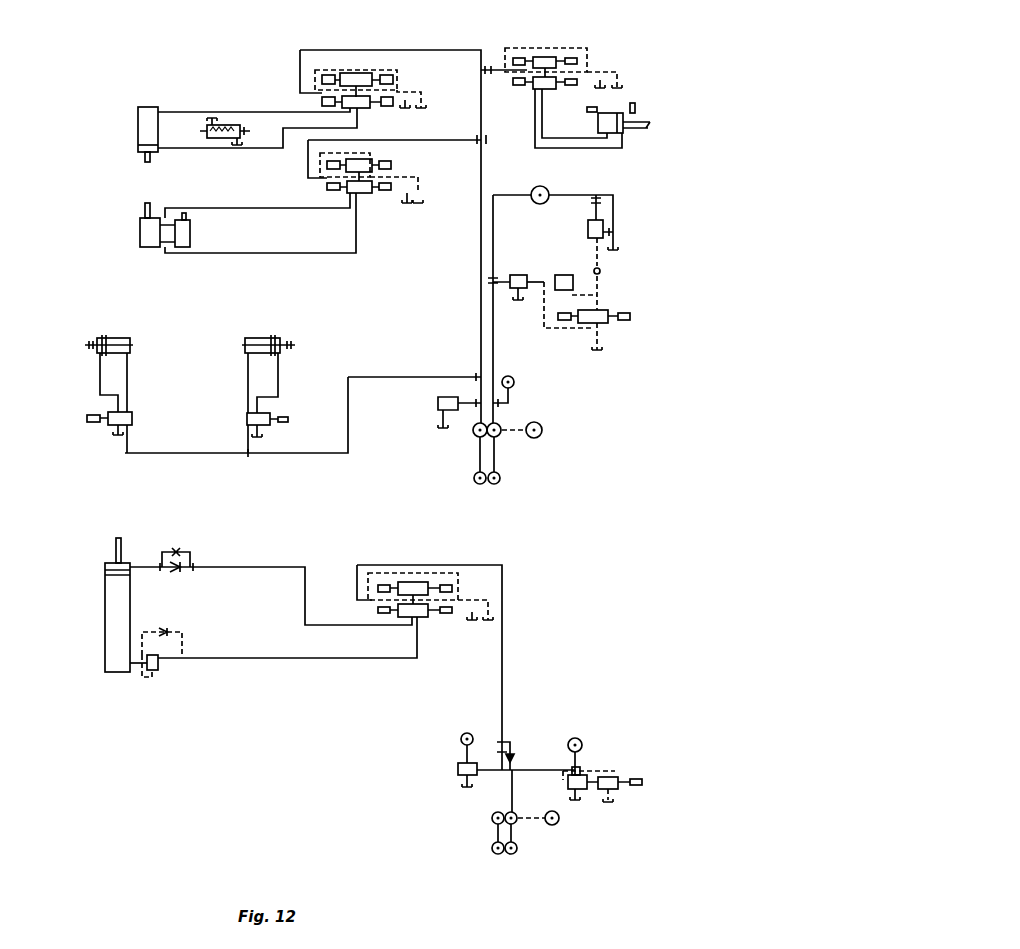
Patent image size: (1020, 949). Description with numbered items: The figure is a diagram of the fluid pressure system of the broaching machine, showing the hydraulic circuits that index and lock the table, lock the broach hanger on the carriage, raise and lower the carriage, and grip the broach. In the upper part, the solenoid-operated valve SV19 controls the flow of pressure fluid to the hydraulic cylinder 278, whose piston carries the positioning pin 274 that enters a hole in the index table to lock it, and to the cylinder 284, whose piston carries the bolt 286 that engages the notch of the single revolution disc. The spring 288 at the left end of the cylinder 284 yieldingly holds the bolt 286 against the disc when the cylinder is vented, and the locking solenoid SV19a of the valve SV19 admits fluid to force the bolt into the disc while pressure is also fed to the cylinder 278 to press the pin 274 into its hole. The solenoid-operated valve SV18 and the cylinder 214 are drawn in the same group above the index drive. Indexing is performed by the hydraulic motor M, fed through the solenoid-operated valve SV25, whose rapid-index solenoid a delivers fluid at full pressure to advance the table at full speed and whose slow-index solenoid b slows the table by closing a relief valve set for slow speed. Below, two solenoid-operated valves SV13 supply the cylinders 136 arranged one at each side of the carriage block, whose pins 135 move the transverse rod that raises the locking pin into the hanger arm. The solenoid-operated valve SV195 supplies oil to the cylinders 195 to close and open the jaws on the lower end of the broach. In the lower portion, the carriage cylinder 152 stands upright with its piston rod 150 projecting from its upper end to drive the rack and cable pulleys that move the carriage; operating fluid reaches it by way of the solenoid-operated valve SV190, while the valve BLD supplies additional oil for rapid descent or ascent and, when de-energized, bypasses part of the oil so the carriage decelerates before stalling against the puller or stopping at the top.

The cylinder 278 is at (138, 128).
The positioning pin 274 is at (146, 160).
The cylinder 284 is at (223, 125).
The bolt 286 is at (205, 127).
The spring 288 is at (225, 140).
The cylinders 195 is at (192, 233).
The cylinders 136 is at (114, 337).
The pins 135 is at (90, 344).
The piston rod 150 is at (115, 550).
The carriage cylinder 152 is at (105, 615).
The cylinder 214 is at (612, 117).
The solenoid-operated valve SV19 is at (355, 70).
The locking solenoid SV19a is at (360, 110).
The solenoid-operated valve SV195 is at (364, 193).
The solenoid valve SV18 is at (546, 48).
The solenoid-operated valve SV25 is at (605, 323).
The solenoid-operated valve SV13 is at (107, 422).
The solenoid-operated valve SV190 is at (409, 565).
The valve BLD is at (586, 775).
The hydraulic motor M is at (547, 189).
The rapid index solenoid a is at (563, 294).
The slow index solenoid b is at (632, 309).